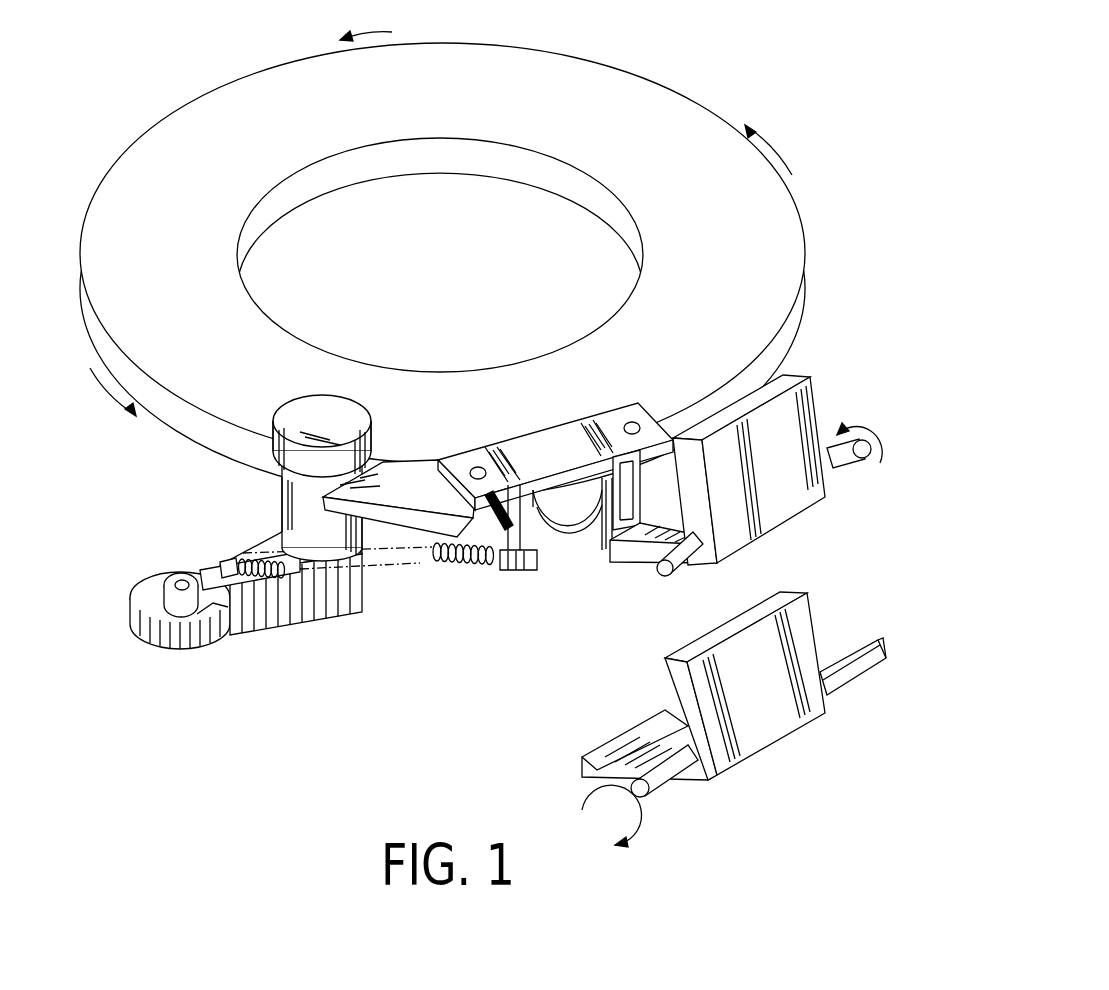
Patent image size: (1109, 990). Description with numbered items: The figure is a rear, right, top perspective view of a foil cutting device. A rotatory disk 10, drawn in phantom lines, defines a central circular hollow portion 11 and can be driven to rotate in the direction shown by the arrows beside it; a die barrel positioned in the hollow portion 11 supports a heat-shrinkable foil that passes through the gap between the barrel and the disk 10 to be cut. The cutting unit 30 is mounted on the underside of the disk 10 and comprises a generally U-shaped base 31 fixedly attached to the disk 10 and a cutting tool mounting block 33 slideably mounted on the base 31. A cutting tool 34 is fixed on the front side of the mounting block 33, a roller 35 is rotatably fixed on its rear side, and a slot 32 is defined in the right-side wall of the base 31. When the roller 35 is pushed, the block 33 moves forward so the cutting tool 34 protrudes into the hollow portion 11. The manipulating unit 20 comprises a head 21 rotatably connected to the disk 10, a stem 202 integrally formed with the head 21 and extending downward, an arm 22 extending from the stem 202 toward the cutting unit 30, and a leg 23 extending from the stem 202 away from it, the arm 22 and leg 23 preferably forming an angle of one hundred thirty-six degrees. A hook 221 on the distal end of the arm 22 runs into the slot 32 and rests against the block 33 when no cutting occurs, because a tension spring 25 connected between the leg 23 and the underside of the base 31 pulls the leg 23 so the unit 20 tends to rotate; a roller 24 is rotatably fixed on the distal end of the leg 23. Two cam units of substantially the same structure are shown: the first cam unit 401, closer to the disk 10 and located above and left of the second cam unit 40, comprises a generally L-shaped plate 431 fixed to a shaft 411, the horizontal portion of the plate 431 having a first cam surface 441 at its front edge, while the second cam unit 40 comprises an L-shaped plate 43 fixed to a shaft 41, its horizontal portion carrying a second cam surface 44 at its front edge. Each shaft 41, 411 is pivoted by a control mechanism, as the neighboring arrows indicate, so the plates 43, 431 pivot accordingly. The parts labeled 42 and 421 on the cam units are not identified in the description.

The rotatory disk 10 is at (718, 98).
The central circular hollow portion 11 is at (443, 255).
The manipulating unit 20 is at (268, 573).
The head 21 is at (368, 413).
The stem 202 is at (290, 497).
The arm 22 is at (424, 527).
The leg 23 is at (282, 620).
The roller 24 is at (122, 622).
The tension spring 25 is at (243, 557).
The cutting unit 30 is at (553, 478).
The U-shaped base 31 is at (518, 570).
The slot 32 is at (505, 537).
The cutting tool mounting block 33 is at (545, 535).
The cutting tool 34 is at (557, 415).
The roller 35 is at (572, 527).
The hook 221 is at (492, 488).
The second cam unit 40 is at (727, 611).
The shaft 41 is at (883, 663).
The drive block 42 is at (807, 633).
The L-shaped plate 43 is at (587, 770).
The second cam surface 44 is at (640, 727).
The first cam unit 401 is at (822, 505).
The shaft 411 is at (877, 458).
The second block body 421 is at (810, 402).
The L-shaped plate 431 is at (640, 553).
The first cam surface 441 is at (665, 493).